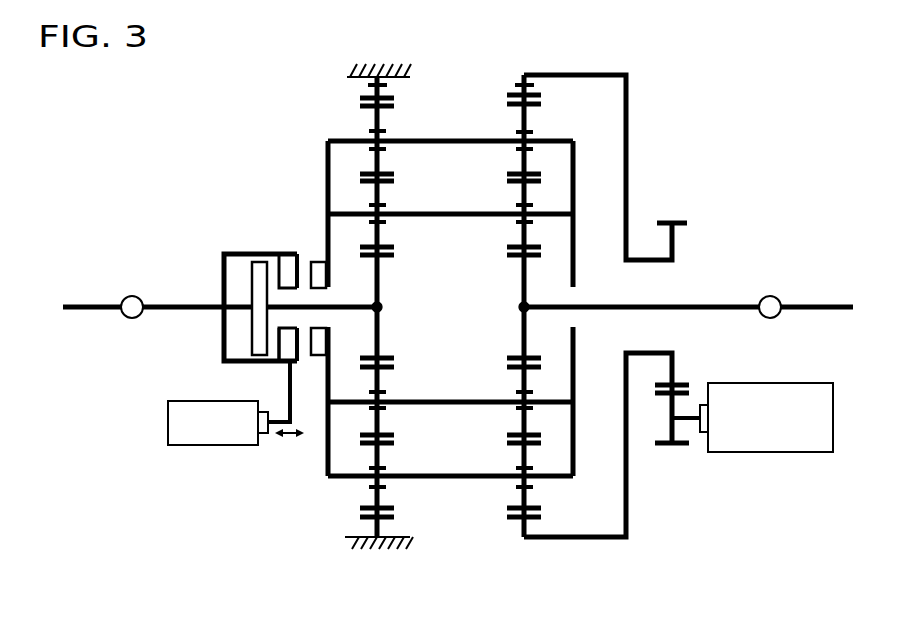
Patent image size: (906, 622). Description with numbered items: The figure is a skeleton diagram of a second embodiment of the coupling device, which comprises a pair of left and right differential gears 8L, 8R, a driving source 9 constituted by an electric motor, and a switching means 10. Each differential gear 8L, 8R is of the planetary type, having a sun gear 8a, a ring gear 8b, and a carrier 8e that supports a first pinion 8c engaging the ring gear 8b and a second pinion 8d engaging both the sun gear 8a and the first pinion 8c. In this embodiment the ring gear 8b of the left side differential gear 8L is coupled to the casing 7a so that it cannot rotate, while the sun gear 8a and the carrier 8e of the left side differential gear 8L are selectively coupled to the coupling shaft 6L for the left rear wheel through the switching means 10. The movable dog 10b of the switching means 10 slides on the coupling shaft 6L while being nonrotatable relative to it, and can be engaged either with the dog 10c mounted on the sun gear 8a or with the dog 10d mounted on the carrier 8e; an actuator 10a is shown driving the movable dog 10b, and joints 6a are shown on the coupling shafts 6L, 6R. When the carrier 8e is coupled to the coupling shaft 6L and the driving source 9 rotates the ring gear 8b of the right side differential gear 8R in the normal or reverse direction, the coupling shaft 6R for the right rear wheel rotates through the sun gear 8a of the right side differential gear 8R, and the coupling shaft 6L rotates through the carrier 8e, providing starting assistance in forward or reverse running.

The coupling shaft for the left rear wheel 6L is at (95, 299).
The coupling shaft for the right rear wheel 6R is at (823, 302).
The universal joint 6a is at (135, 320).
The casing 7a is at (381, 548).
The left side differential gear 8L is at (316, 103).
The right side differential gear 8R is at (636, 98).
The sun gear 8a is at (380, 272).
The ring gear 8b is at (395, 103).
The first pinion 8c is at (363, 106).
The second pinion 8d is at (395, 180).
The carrier 8e is at (327, 200).
The driving source 9 is at (762, 455).
The switching means 10 is at (282, 452).
The clutch actuator 10a is at (212, 446).
The movable dog 10b is at (284, 340).
The dog 10c is at (257, 281).
The dog 10d is at (318, 356).